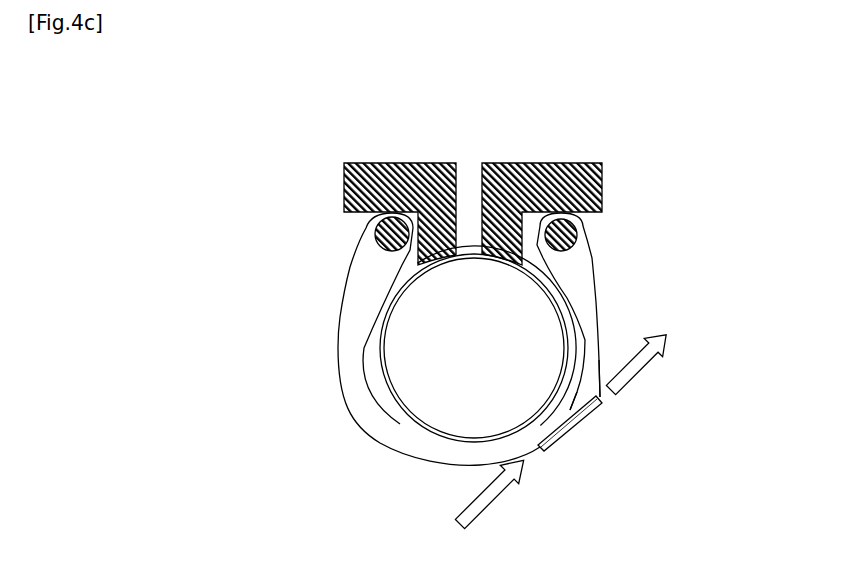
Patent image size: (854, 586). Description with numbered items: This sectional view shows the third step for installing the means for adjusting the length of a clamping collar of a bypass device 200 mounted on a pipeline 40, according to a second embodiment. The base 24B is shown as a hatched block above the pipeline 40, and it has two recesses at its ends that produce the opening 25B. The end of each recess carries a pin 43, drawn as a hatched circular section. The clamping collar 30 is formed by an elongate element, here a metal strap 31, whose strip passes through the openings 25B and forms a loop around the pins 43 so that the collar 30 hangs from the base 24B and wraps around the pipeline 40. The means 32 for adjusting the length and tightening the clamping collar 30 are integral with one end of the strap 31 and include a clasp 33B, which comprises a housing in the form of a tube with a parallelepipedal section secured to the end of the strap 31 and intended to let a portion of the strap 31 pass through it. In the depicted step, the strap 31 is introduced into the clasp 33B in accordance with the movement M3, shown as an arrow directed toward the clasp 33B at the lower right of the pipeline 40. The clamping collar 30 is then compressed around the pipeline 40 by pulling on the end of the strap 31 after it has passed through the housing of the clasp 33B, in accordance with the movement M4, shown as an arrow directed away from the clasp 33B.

The base 24B is at (413, 163).
The opening 25B is at (530, 225).
The clamping collar 30 is at (484, 340).
The metal strap 31 is at (595, 265).
The means for adjusting the length 32 is at (610, 421).
The clasp 33B is at (570, 418).
The pipeline 40 is at (412, 423).
The pins 43 is at (376, 232).
The bypass device 200 is at (662, 536).
The movement M3 is at (488, 513).
The movement M4 is at (650, 368).